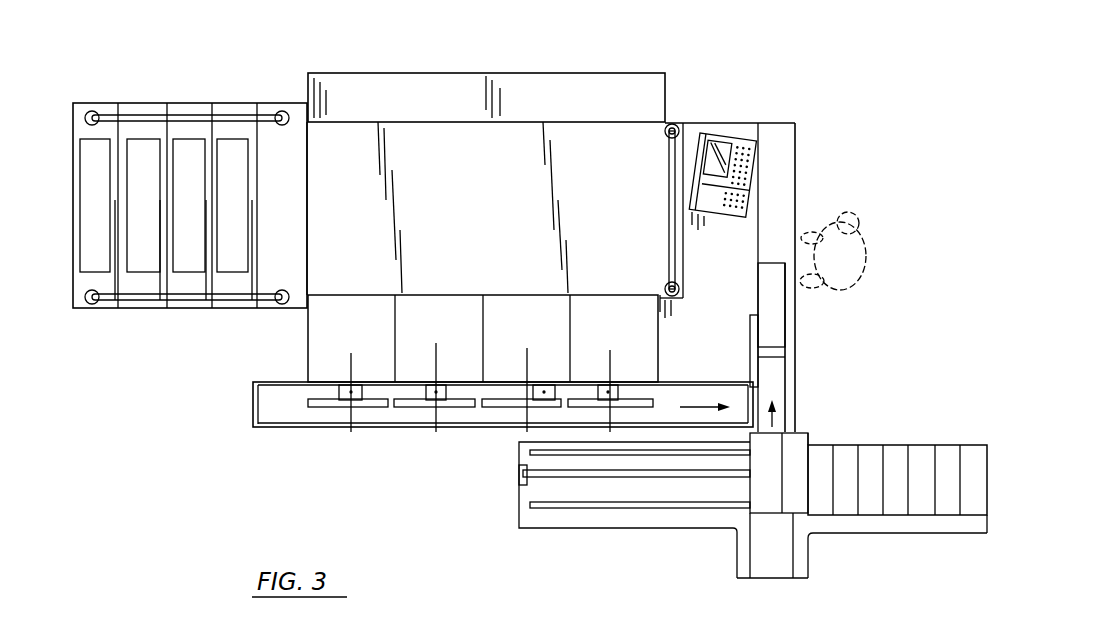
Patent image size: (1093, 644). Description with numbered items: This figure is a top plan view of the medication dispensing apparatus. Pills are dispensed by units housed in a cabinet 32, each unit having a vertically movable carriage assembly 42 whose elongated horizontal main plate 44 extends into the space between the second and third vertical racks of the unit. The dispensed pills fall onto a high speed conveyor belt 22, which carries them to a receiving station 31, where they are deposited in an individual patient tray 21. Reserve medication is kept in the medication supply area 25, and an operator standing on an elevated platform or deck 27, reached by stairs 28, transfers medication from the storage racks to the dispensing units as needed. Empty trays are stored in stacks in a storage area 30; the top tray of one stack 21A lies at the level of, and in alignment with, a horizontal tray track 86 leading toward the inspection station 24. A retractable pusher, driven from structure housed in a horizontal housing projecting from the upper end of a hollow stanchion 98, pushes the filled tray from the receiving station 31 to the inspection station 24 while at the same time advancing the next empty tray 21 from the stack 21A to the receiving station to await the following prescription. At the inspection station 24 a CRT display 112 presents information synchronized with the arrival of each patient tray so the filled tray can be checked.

The tray 21 is at (766, 316).
The tray stack 21A is at (996, 479).
The high speed conveyor belt 22 is at (470, 417).
The inspection station 24 is at (779, 202).
The medication supply area 25 is at (505, 80).
The elevated platform or deck 27 is at (490, 218).
The stairs 28 is at (95, 206).
The storage area 30 is at (656, 496).
The receiving station 31 is at (792, 392).
The cabinet 32 is at (351, 302).
The carriage assembly 42 is at (373, 413).
The main plate 44 is at (525, 394).
The horizontal tray track 86 is at (767, 330).
The stanchion 98 is at (808, 564).
The CRT display 112 is at (721, 140).